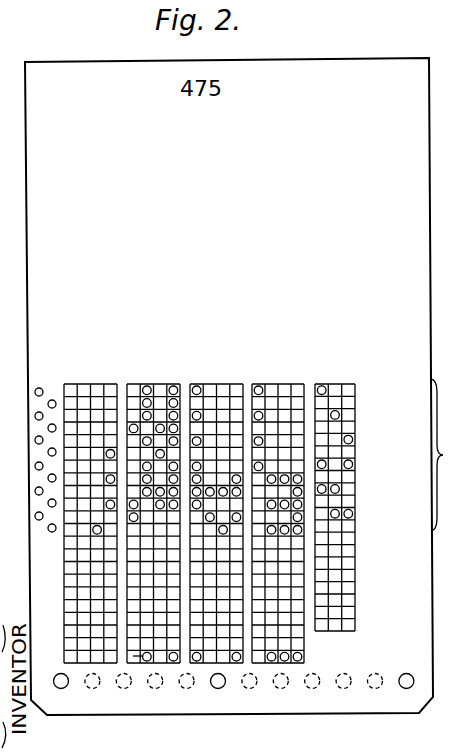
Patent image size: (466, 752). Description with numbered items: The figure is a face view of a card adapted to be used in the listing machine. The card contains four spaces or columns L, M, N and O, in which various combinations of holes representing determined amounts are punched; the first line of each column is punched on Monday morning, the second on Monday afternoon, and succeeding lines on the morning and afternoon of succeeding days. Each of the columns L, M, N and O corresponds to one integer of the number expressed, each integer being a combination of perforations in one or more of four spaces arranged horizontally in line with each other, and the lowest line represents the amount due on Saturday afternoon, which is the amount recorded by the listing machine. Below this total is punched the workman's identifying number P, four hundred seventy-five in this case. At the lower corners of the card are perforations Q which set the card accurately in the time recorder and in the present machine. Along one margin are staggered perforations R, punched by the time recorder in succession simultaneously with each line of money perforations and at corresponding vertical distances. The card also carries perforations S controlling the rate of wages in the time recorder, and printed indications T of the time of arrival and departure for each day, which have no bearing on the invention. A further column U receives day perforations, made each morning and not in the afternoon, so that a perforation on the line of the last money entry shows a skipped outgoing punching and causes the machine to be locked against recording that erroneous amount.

The margin perforations R is at (35, 416).
The first money column L is at (90, 509).
The second money column M is at (153, 509).
The third money column N is at (216, 509).
The fourth money column O is at (278, 509).
The day perforation column U is at (335, 493).
The printed time indications T is at (408, 458).
The corner perforations Q is at (61, 673).
The workman's identifying number P is at (133, 656).
The rate perforations S is at (217, 689).